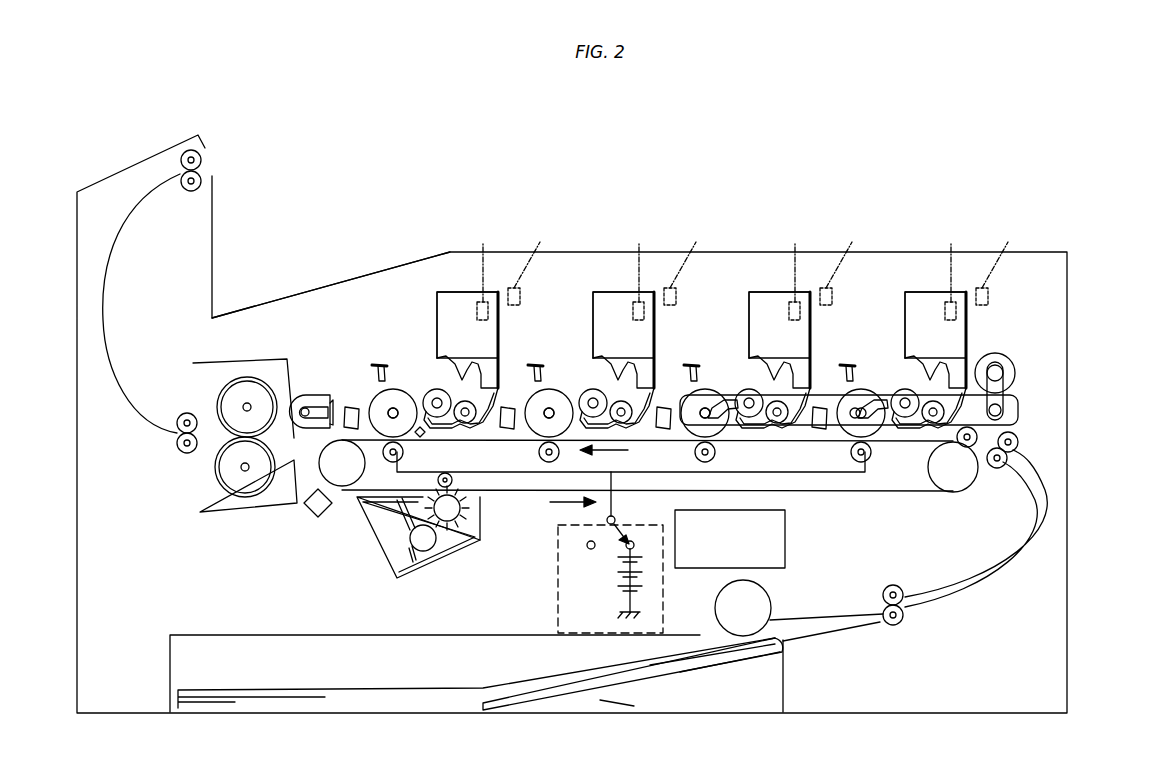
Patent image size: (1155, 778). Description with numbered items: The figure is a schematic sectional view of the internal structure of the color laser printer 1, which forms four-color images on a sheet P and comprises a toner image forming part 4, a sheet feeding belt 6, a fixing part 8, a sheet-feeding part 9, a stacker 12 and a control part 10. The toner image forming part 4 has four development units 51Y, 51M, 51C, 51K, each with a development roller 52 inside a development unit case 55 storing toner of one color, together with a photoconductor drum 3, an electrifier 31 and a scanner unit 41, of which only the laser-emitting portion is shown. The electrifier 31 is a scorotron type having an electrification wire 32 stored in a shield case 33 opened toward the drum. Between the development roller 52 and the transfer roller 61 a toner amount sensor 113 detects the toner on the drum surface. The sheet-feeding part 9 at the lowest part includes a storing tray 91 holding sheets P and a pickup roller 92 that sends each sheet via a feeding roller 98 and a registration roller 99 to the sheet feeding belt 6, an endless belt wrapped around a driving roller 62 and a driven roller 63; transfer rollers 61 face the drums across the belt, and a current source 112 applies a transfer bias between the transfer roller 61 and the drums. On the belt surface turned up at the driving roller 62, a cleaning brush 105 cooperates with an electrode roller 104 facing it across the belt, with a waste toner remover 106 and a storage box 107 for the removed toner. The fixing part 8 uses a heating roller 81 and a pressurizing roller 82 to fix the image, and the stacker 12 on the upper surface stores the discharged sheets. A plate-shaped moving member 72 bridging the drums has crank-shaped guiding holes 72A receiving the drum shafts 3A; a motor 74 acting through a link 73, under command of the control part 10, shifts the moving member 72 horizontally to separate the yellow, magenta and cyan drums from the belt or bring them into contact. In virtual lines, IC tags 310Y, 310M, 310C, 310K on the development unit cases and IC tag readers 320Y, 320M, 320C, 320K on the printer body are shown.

The printer 1 is at (1080, 201).
The photoconductor drum 3 is at (393, 377).
The shaft 3A is at (394, 408).
The toner image forming part 4 is at (998, 312).
The sheet feeding belt 6 is at (648, 489).
The fixing part 8 is at (223, 413).
The sheet-feeding part 9 is at (609, 700).
The control part 10 is at (787, 540).
The stacker 12 is at (305, 292).
The electrifier 31 is at (351, 389).
The electrification wire 32 is at (345, 425).
The shield case 33 is at (322, 398).
The scanner unit 41 is at (368, 345).
The development unit 51K is at (502, 325).
The development unit 51C is at (658, 325).
The development unit 51M is at (814, 325).
The development unit 51Y is at (971, 325).
The development roller 52 is at (455, 381).
The development unit case 55 is at (458, 303).
The transfer roller 61 is at (870, 455).
The driving roller 62 is at (343, 487).
The driven roller 63 is at (953, 495).
The moving member 72 is at (896, 387).
The guiding hole 72A is at (867, 400).
The link 73 is at (1003, 390).
The motor 74 is at (1013, 368).
The heating roller 81 is at (227, 400).
The pressurizing roller 82 is at (225, 470).
The storing tray 91 is at (787, 678).
The pickup roller 92 is at (772, 600).
The feeding roller 98 is at (903, 598).
The registration roller 99 is at (1018, 446).
The electrode roller 104 is at (472, 500).
The cleaning brush 105 is at (482, 526).
The waste toner remover 106 is at (430, 560).
The storage box 107 is at (428, 540).
The current source 112 is at (556, 578).
The toner amount sensor 113 is at (425, 434).
The IC tag 310K is at (483, 269).
The IC tag 310C is at (639, 269).
The IC tag 310M is at (794, 269).
The IC tag 310Y is at (951, 269).
The IC tag reader 320K is at (535, 261).
The IC tag reader 320C is at (691, 261).
The IC tag reader 320M is at (848, 261).
The IC tag reader 320Y is at (1003, 261).
The sheet P is at (471, 710).